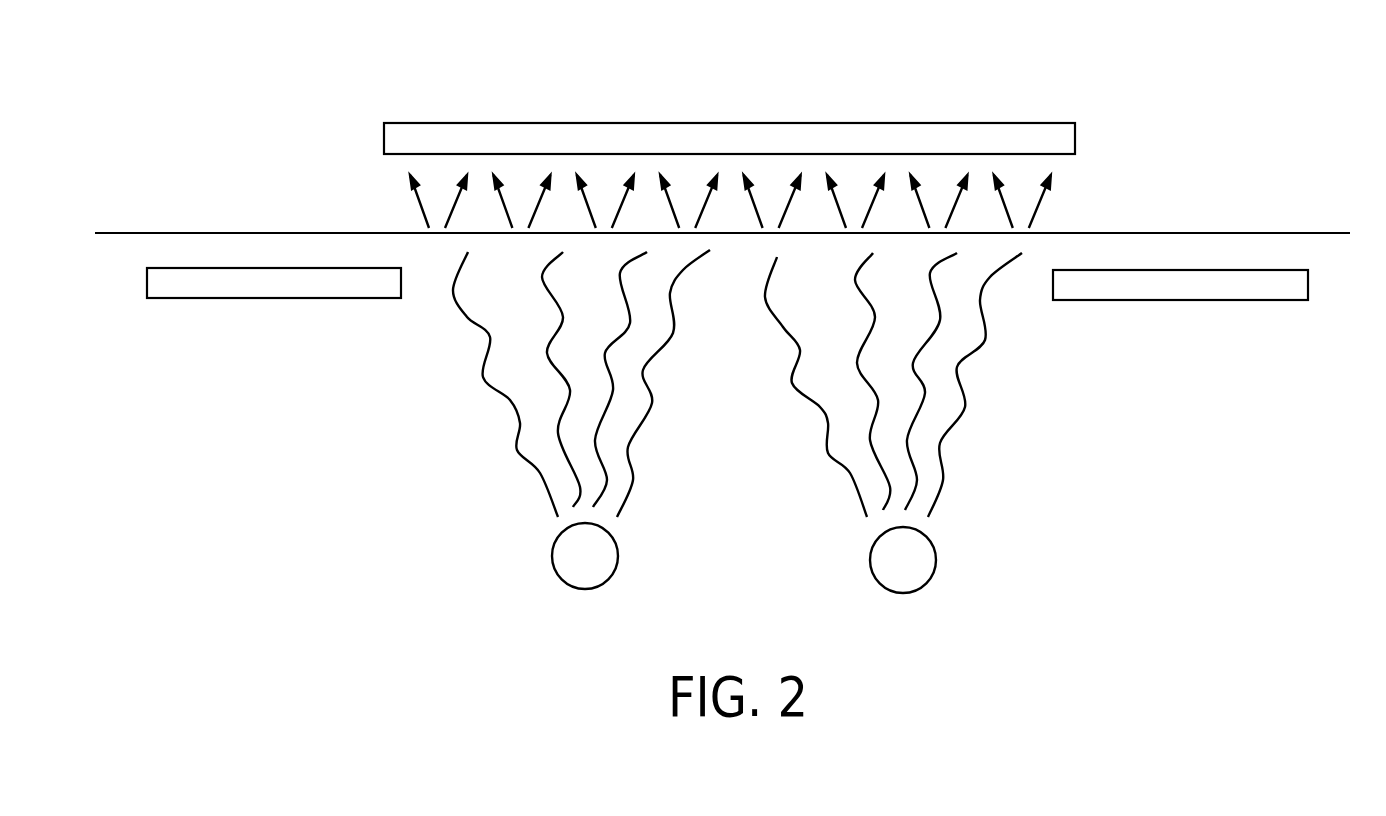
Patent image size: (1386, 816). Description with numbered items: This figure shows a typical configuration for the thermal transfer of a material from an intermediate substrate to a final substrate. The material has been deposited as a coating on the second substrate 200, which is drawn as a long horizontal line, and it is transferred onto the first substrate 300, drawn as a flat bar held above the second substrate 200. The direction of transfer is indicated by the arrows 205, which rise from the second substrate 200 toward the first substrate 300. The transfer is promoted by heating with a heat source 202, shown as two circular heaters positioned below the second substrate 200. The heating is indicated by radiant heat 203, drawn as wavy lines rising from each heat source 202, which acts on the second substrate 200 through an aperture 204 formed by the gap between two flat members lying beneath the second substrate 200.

The first substrate 300 is at (905, 120).
The second substrate 200 is at (1230, 232).
The arrows 205 is at (1037, 207).
The aperture 204 is at (1232, 300).
The radiant heat 203 is at (963, 410).
The heat source 202 is at (935, 562).